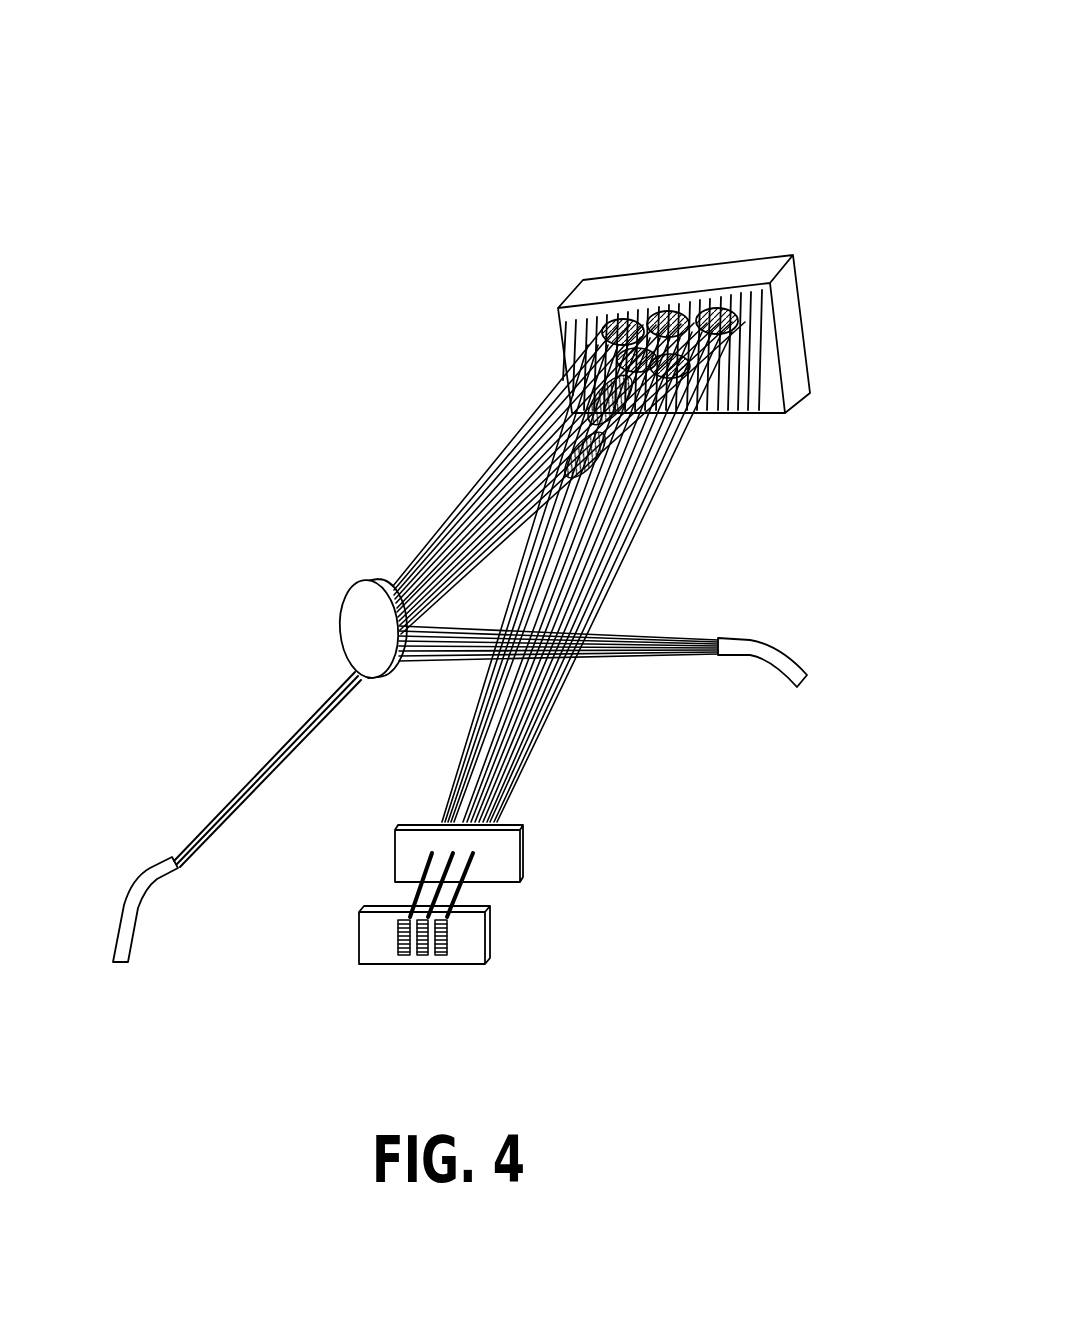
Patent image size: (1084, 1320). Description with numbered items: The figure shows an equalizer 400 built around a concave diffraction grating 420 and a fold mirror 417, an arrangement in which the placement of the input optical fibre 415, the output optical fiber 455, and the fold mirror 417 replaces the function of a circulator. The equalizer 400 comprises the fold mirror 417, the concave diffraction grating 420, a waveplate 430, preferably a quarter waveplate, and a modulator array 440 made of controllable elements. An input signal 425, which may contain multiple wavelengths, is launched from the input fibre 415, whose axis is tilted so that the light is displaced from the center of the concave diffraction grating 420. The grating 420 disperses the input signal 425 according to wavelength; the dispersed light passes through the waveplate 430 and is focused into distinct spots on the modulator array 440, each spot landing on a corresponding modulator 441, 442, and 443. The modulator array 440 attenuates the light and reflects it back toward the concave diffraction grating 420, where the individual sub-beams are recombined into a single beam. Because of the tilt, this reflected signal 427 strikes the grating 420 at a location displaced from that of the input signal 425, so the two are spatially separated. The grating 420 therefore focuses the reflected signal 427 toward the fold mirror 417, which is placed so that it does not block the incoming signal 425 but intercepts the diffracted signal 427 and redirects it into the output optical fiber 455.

The equalizer 400 is at (550, 143).
The input optical fibre 415 is at (140, 882).
The fold mirror 417 is at (353, 623).
The concave diffraction grating 420 is at (602, 278).
The input signal 425 is at (290, 745).
The reflected signal 427 is at (432, 527).
The waveplate 430 is at (528, 837).
The modulator array 440 is at (490, 942).
The modulator 441 is at (404, 963).
The modulator 442 is at (422, 963).
The modulator 443 is at (447, 963).
The output optical fiber 455 is at (772, 643).